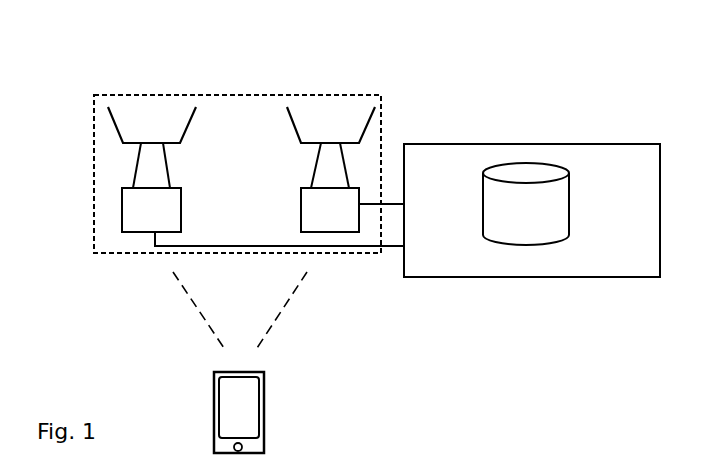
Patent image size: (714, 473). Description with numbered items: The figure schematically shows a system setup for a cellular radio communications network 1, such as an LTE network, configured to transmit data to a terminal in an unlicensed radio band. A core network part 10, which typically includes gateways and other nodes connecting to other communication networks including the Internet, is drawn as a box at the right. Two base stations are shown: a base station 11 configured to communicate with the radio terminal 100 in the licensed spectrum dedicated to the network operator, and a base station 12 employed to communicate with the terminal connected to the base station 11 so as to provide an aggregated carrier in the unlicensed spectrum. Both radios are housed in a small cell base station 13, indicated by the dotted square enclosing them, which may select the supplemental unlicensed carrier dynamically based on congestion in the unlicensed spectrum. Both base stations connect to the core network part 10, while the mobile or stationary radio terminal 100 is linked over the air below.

The cellular radio communications network 1 is at (377, 232).
The core network part 10 is at (627, 270).
The base station 11 is at (139, 222).
The base station 12 is at (317, 222).
The small cell base station 13 is at (232, 154).
The radio terminal 100 is at (263, 397).